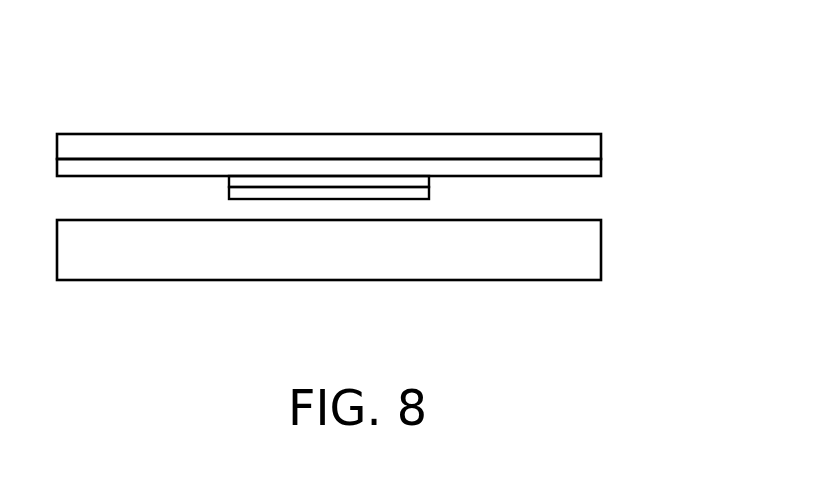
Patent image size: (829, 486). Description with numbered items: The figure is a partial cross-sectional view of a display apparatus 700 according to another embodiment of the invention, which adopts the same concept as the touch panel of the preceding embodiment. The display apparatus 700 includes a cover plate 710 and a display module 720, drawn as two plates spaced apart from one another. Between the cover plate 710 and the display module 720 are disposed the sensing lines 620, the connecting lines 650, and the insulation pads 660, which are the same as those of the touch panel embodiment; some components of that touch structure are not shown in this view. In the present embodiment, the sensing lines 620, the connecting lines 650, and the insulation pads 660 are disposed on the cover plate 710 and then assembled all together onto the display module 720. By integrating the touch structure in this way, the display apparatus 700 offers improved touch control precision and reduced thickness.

The cover plate 710 is at (593, 146).
The sensing lines 620 is at (593, 172).
The insulation pads 660 is at (288, 182).
The connecting lines 650 is at (373, 193).
The display module 720 is at (592, 265).
The display apparatus 700 is at (601, 333).